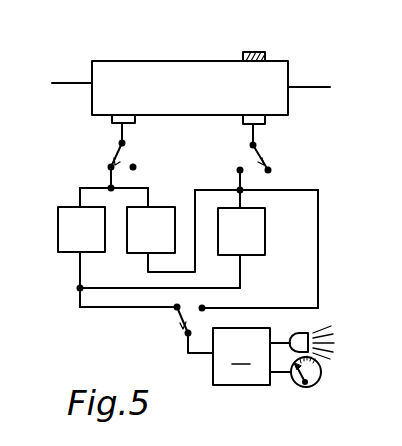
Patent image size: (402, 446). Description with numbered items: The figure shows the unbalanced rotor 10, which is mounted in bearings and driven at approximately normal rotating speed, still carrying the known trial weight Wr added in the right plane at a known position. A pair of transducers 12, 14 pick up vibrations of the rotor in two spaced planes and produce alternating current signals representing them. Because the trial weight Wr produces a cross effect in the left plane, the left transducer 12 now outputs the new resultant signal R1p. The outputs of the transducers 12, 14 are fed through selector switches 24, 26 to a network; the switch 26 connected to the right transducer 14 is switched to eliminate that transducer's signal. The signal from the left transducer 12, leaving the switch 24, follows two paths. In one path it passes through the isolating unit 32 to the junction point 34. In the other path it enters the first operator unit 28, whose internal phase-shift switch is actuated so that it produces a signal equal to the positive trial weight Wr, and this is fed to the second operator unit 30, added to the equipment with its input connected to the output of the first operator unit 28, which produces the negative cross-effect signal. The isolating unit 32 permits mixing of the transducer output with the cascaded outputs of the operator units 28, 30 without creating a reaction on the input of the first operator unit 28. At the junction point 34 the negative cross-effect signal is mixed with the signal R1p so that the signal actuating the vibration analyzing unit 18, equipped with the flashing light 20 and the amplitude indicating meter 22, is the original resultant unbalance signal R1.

The unbalanced rotor 10 is at (167, 62).
The trial weight Wr is at (259, 45).
The left transducer 12 is at (112, 119).
The right transducer 14 is at (243, 120).
The selector switch 24 is at (114, 151).
The resultant signal R1' R1p is at (141, 142).
The selector switch 26 is at (258, 152).
The isolating unit 32 is at (60, 209).
The first operator unit 28 is at (163, 207).
The second operator unit 30 is at (263, 216).
The junction point 34 is at (78, 287).
The original resultant unbalance signal R1 is at (169, 389).
The vibration analyzing unit 18 is at (241, 356).
The flashing light 20 is at (293, 335).
The amplitude indicating meter 22 is at (300, 388).